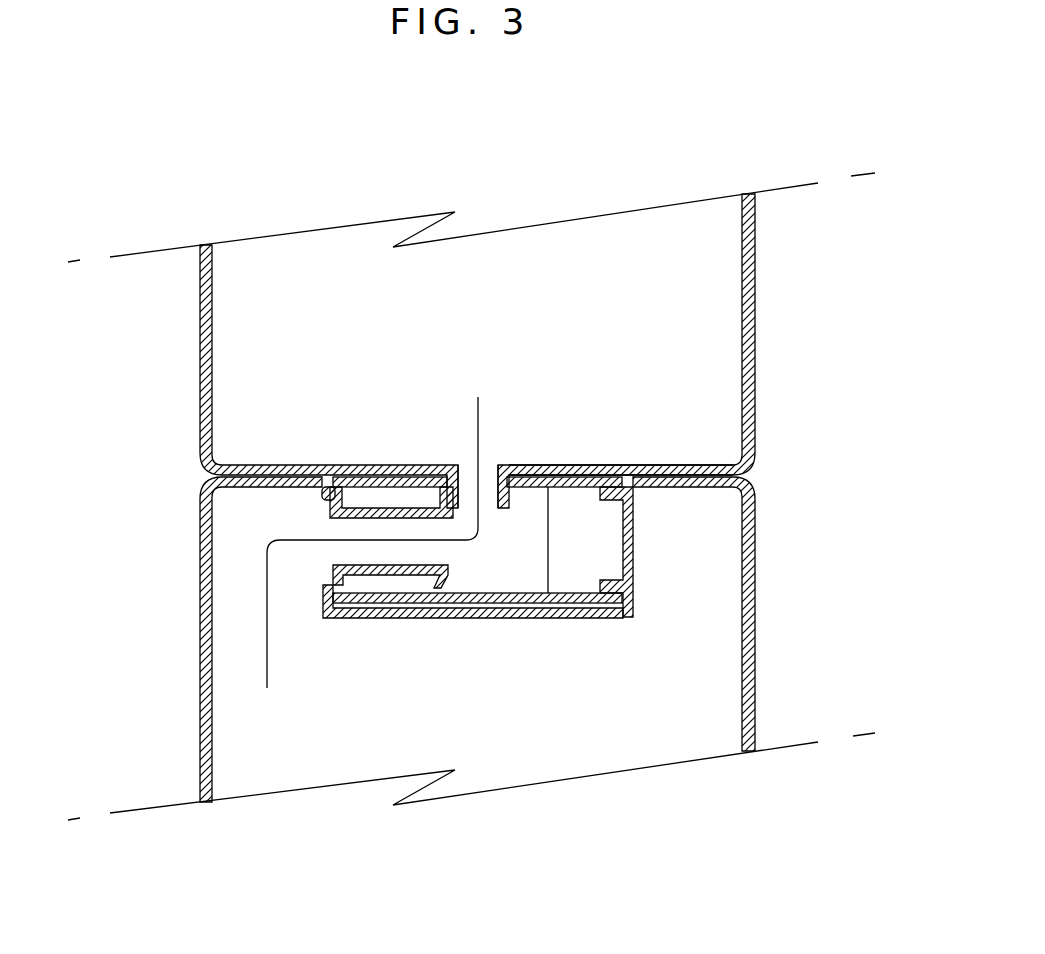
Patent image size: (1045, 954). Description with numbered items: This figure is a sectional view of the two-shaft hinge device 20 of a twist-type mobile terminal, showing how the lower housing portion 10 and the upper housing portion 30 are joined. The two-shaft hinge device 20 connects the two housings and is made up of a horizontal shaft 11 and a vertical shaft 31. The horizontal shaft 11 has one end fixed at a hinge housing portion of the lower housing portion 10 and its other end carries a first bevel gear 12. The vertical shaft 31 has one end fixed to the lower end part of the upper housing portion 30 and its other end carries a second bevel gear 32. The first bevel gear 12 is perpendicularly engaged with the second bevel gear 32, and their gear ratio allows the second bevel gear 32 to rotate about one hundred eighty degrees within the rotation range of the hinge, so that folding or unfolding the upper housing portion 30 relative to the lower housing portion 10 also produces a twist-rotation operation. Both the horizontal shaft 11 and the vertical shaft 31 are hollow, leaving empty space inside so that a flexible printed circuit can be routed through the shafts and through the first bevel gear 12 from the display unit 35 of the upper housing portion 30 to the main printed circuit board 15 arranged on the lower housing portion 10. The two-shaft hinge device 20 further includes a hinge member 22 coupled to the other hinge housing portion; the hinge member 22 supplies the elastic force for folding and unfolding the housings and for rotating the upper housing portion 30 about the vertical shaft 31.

The lower housing portion 10 is at (755, 608).
The horizontal shaft 11 is at (367, 520).
The first bevel gear 12 is at (427, 498).
The main printed circuit board 15 is at (365, 563).
The two-shaft hinge device 20 is at (526, 614).
The hinge member 22 is at (580, 570).
The upper housing portion 30 is at (708, 310).
The vertical shaft 31 is at (492, 478).
The second bevel gear 32 is at (549, 476).
The display unit 35 is at (478, 430).